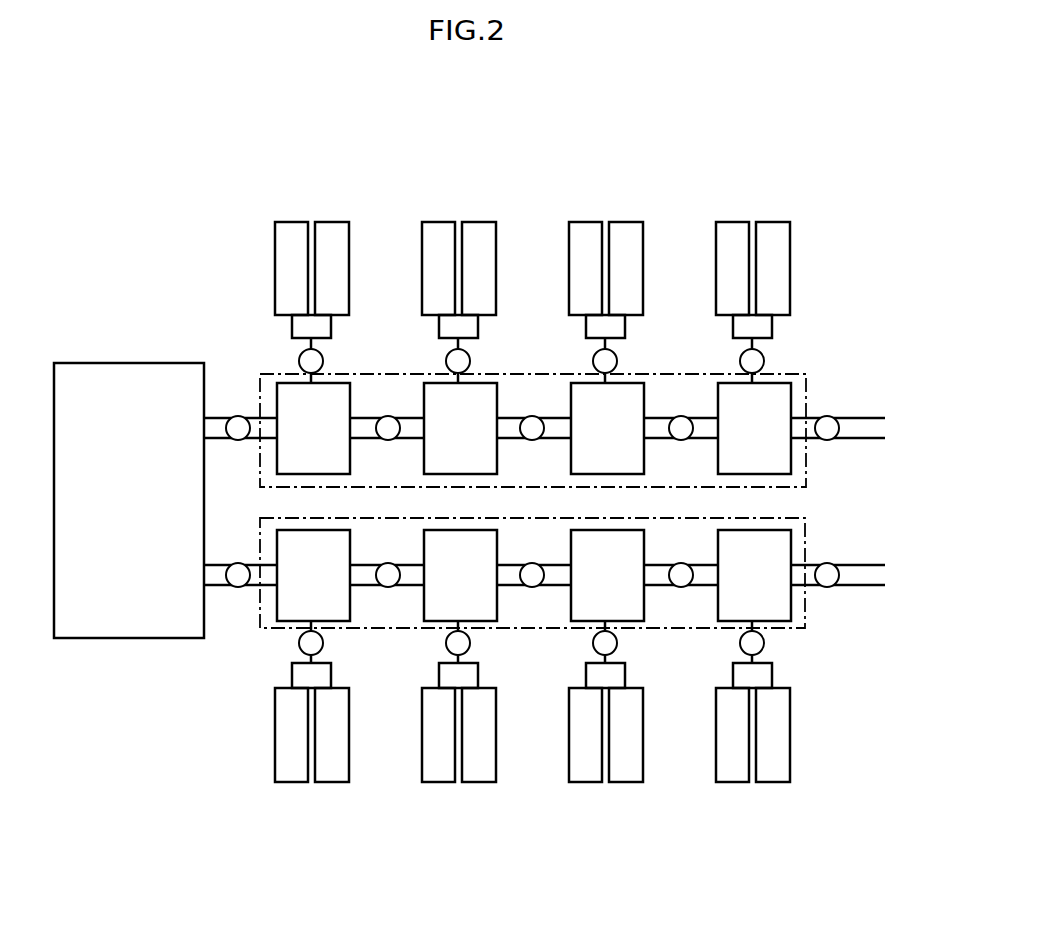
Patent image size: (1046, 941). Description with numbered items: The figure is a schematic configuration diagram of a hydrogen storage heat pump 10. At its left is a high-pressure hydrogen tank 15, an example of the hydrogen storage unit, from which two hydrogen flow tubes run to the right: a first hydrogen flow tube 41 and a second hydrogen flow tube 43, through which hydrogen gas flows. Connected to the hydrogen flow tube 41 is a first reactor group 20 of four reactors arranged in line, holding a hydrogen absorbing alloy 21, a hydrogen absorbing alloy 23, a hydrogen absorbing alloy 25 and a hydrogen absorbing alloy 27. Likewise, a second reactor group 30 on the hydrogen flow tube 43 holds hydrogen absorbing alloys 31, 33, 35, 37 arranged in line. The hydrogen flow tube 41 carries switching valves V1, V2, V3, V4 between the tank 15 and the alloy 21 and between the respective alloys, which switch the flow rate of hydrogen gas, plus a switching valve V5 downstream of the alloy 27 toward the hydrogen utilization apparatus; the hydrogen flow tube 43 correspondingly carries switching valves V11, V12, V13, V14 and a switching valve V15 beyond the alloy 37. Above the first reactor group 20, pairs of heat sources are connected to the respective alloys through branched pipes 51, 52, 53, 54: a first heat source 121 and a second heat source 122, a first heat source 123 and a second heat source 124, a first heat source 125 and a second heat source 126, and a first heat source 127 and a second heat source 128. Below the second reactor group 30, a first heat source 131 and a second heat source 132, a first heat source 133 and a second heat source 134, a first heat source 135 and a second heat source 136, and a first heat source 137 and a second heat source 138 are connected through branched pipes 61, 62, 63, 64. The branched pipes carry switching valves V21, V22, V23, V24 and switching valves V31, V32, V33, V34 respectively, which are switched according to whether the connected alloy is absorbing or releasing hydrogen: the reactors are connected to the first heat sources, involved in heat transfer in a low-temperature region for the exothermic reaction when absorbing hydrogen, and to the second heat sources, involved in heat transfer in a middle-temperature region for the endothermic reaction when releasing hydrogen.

The hydrogen storage heat pump 10 is at (472, 507).
The high-pressure hydrogen tank 15 is at (125, 363).
The first reactor group 20 is at (807, 393).
The second reactor group 30 is at (806, 525).
The hydrogen absorbing alloy 21 is at (315, 474).
The hydrogen absorbing alloy 23 is at (462, 474).
The hydrogen absorbing alloy 25 is at (609, 474).
The hydrogen absorbing alloy 27 is at (756, 474).
The hydrogen absorbing alloy 31 is at (350, 608).
The hydrogen absorbing alloy 33 is at (497, 608).
The hydrogen absorbing alloy 35 is at (644, 608).
The hydrogen absorbing alloy 37 is at (791, 608).
The hydrogen flow tube 41 is at (883, 440).
The hydrogen flow tube 43 is at (883, 588).
The branched pipe 51 is at (292, 339).
The branched pipe 52 is at (439, 339).
The branched pipe 53 is at (586, 339).
The branched pipe 54 is at (733, 339).
The branched pipe 61 is at (331, 665).
The branched pipe 62 is at (478, 665).
The branched pipe 63 is at (625, 665).
The branched pipe 64 is at (772, 665).
The first heat source 121 is at (293, 222).
The second heat source 122 is at (331, 222).
The first heat source 123 is at (440, 222).
The second heat source 124 is at (478, 222).
The first heat source 125 is at (587, 222).
The second heat source 126 is at (625, 222).
The first heat source 127 is at (734, 222).
The second heat source 128 is at (772, 222).
The first heat source 131 is at (291, 782).
The second heat source 132 is at (331, 782).
The first heat source 133 is at (438, 782).
The second heat source 134 is at (478, 782).
The first heat source 135 is at (585, 782).
The second heat source 136 is at (625, 782).
The first heat source 137 is at (732, 782).
The second heat source 138 is at (772, 782).
The switching valve V1 is at (238, 450).
The switching valve V2 is at (388, 450).
The switching valve V3 is at (532, 450).
The switching valve V4 is at (681, 450).
The switching valve V5 is at (827, 450).
The switching valve V11 is at (238, 564).
The switching valve V12 is at (388, 564).
The switching valve V13 is at (532, 564).
The switching valve V14 is at (681, 564).
The switching valve V15 is at (827, 587).
The switching valve V21 is at (323, 362).
The switching valve V22 is at (470, 362).
The switching valve V23 is at (617, 362).
The switching valve V24 is at (764, 362).
The switching valve V31 is at (298, 643).
The switching valve V32 is at (445, 643).
The switching valve V33 is at (592, 643).
The switching valve V34 is at (739, 643).